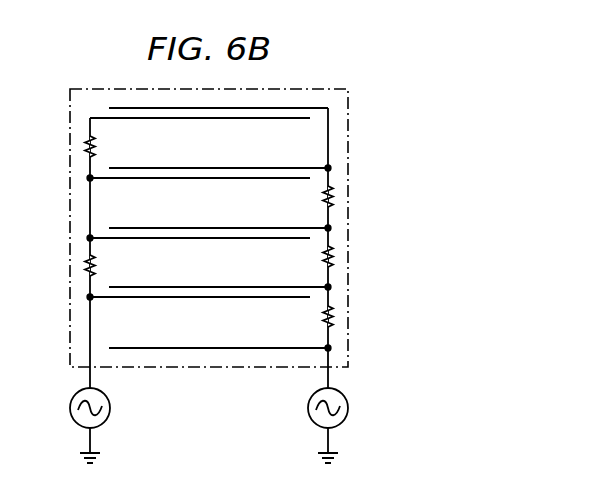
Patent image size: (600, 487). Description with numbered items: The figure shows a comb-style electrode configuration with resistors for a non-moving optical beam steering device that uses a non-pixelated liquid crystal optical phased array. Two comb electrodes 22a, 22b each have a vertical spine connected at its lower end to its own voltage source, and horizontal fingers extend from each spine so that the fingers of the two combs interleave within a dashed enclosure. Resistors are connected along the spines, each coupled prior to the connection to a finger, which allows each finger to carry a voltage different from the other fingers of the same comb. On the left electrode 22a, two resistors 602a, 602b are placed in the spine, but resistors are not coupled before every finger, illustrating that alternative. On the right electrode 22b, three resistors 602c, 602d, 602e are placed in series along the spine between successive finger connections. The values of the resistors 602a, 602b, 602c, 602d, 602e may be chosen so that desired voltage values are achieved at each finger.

The electrode 22a is at (91, 207).
The electrode 22b is at (327, 150).
The resistor 602a is at (97, 150).
The resistor 602b is at (97, 270).
The resistor 602c is at (322, 202).
The resistor 602d is at (322, 262).
The resistor 602e is at (322, 321).